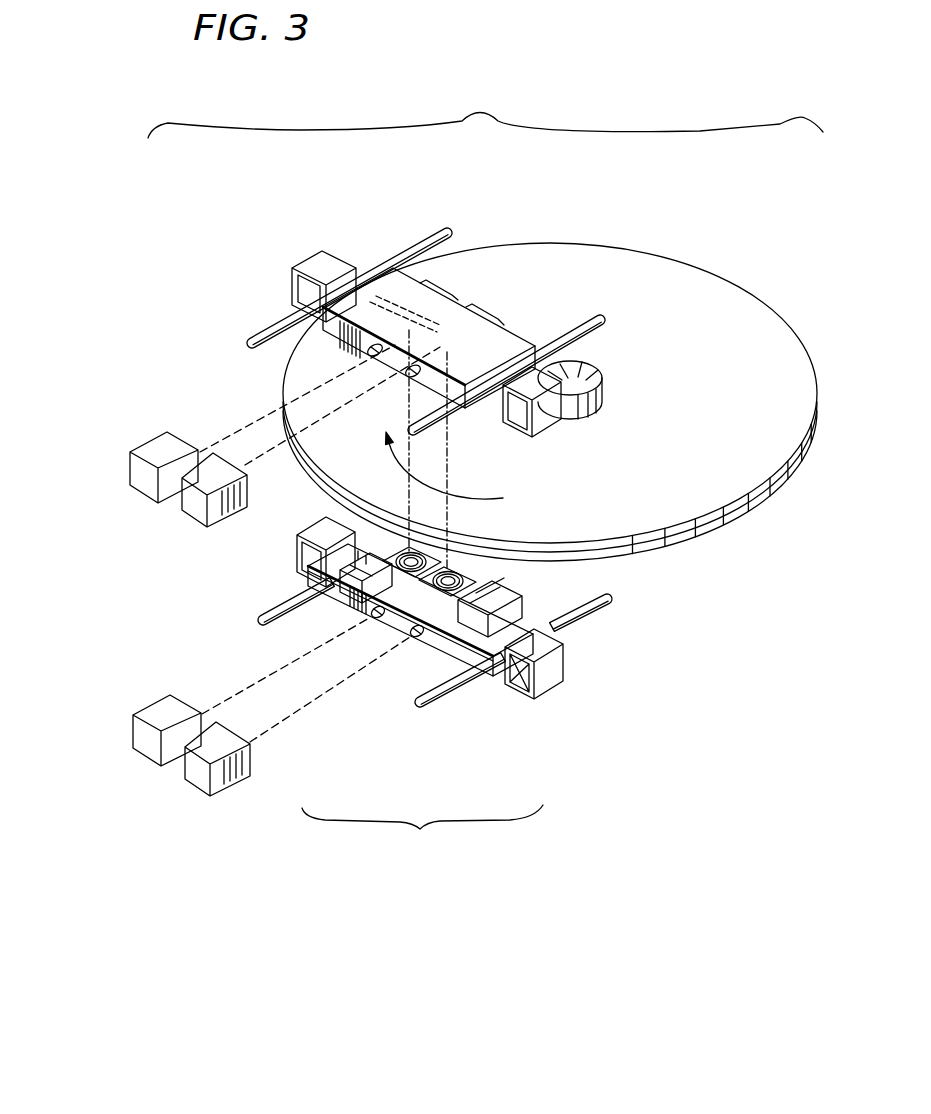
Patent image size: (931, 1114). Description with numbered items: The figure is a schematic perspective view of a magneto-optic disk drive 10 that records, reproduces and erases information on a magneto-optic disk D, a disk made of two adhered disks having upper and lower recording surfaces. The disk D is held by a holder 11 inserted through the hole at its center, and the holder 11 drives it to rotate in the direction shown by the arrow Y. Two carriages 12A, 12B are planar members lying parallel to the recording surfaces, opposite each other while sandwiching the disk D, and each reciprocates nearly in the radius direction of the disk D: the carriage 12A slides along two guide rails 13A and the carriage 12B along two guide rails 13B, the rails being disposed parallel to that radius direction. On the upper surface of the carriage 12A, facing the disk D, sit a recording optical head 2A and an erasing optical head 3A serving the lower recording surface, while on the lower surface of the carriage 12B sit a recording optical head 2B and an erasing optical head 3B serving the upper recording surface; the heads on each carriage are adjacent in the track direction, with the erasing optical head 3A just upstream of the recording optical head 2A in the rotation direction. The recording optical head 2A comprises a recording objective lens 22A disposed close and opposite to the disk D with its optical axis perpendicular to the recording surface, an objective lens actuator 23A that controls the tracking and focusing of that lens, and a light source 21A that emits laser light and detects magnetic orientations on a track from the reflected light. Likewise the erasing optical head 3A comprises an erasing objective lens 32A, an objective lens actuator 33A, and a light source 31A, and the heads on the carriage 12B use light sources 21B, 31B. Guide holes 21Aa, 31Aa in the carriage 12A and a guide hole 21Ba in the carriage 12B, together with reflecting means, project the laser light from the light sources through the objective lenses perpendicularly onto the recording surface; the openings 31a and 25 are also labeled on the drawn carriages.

The magneto-optic disk drive 10 is at (448, 60).
The magneto-optic disk D is at (677, 256).
The holder 11 is at (602, 382).
The carriage 12A is at (565, 605).
The carriage 12B is at (376, 290).
The guide rail 13A is at (306, 597).
The guide rail 13B is at (403, 254).
The recording optical head 2A is at (53, 497).
The recording optical head 2B is at (487, 313).
The erasing optical head 3A is at (413, 833).
The erasing optical head 3B is at (452, 295).
The light source 21A is at (148, 715).
The light source 21B is at (213, 470).
The light source 31A is at (250, 758).
The light source 31B is at (152, 445).
The guide hole 21Aa is at (376, 618).
The guide hole 31Aa is at (415, 637).
The guide hole 21Ba is at (415, 364).
The light entrance opening 31a is at (353, 352).
The recording objective lens 22A is at (348, 607).
The objective lens actuator 23A is at (186, 540).
The erasing objective lens 32A is at (455, 598).
The objective lens actuator 33A is at (487, 625).
The base plate 25 is at (392, 540).
The arrow Y is at (503, 498).